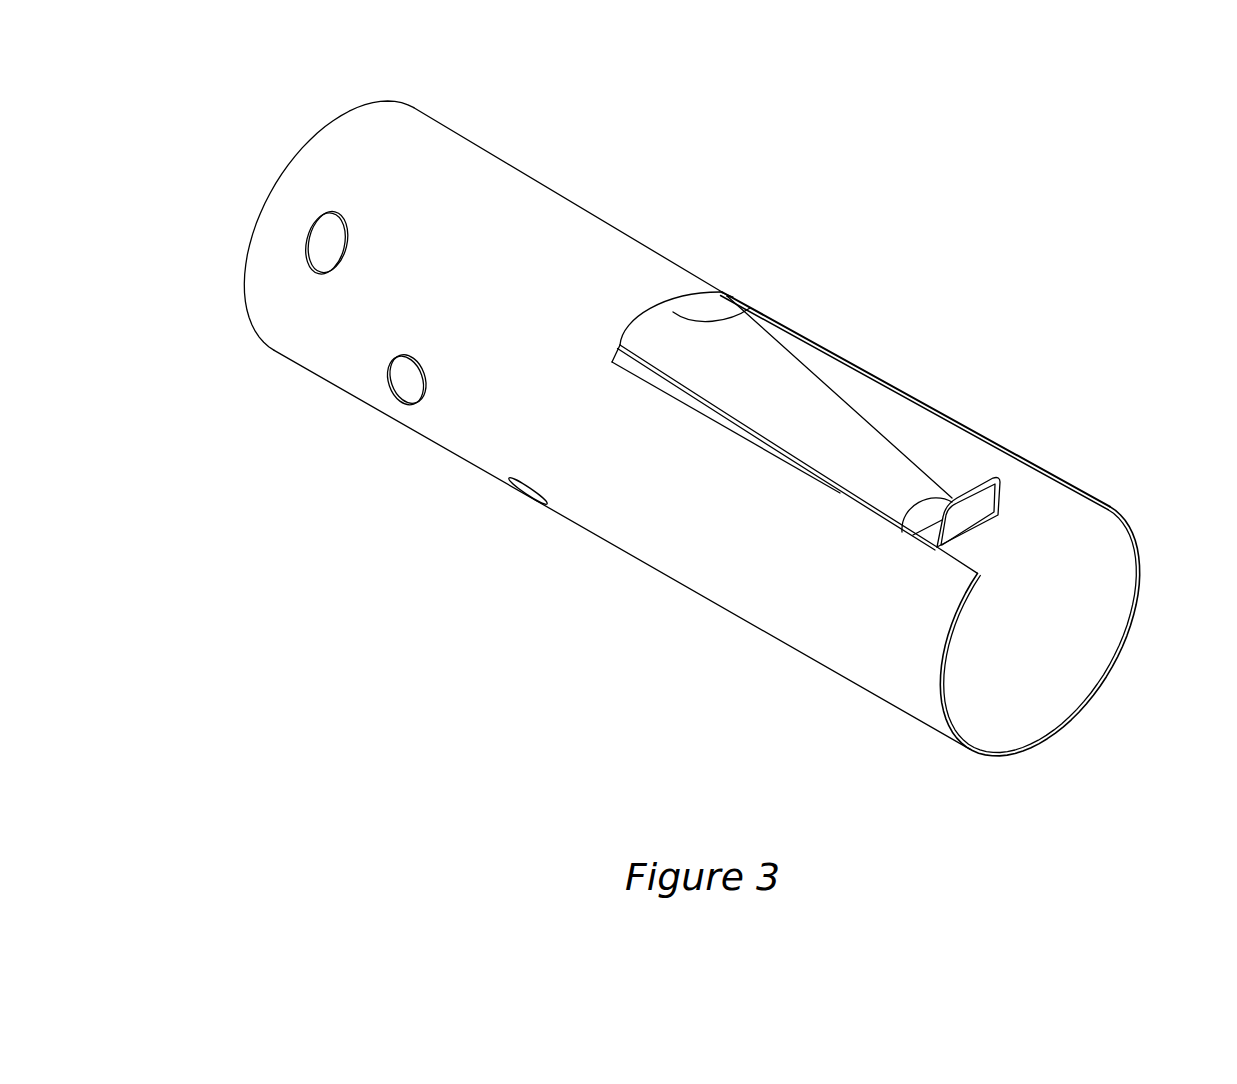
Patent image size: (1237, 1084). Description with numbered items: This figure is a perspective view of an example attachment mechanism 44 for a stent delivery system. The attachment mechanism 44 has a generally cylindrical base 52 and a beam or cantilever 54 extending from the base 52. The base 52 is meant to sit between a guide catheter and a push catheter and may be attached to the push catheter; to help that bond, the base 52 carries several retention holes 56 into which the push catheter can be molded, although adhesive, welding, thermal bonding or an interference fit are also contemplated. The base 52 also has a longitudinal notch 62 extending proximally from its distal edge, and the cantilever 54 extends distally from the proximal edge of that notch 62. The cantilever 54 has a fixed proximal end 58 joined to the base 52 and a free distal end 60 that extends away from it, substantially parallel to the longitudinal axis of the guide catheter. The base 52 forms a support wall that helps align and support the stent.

The attachment mechanism 44 is at (897, 180).
The cylindrical base 52 is at (538, 208).
The cantilever 54 is at (807, 413).
The retention holes 56 is at (325, 242).
The fixed proximal end 58 is at (750, 308).
The free distal end 60 is at (990, 497).
The longitudinal notch 62 is at (1040, 532).